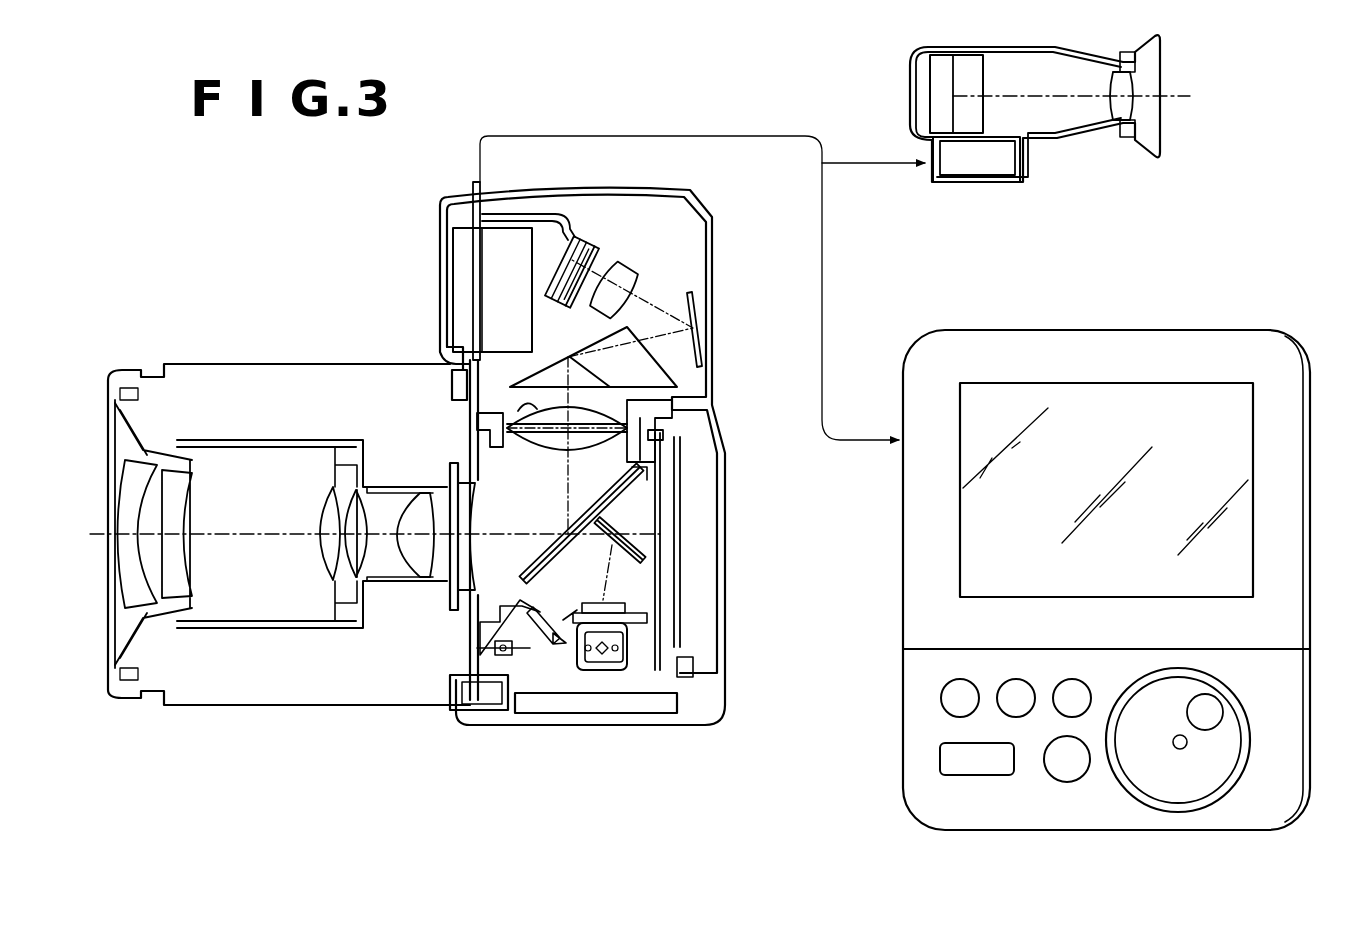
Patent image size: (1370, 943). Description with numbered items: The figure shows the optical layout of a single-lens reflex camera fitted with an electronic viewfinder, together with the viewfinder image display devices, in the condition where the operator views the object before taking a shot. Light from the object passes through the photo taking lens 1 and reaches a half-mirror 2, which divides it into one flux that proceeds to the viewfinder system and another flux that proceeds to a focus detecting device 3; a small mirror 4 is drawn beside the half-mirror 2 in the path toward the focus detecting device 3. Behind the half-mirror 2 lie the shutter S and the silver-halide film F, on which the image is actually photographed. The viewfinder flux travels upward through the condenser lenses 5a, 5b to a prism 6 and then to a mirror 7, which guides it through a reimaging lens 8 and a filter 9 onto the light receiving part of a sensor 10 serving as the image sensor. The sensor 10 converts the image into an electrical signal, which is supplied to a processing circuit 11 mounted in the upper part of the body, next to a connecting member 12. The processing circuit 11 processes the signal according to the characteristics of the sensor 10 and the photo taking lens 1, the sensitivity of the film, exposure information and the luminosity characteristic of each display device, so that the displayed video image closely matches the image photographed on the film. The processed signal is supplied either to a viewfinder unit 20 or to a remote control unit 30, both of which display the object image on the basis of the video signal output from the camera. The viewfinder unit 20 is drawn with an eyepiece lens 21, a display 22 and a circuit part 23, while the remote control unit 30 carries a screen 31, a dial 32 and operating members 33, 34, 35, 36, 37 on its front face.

The photo taking lens 1 is at (280, 708).
The half-mirror 2 is at (530, 570).
The focus detecting device 3 is at (630, 668).
The sub mirror 4 is at (641, 549).
The condenser lens 5a is at (548, 449).
The condenser lens 5b is at (527, 408).
The prism 6 is at (553, 355).
The mirror 7 is at (692, 302).
The reimaging lens 8 is at (630, 278).
The filter 9 is at (600, 243).
The sensor 10 is at (577, 232).
The processing circuit 11 is at (462, 258).
The connector pin 12 is at (469, 188).
The silver-halide film F is at (661, 478).
The shutter S is at (681, 520).
The viewfinder unit 20 is at (1080, 140).
The eyepiece lens 21 is at (1117, 88).
The viewfinder display 22 is at (975, 68).
The viewfinder circuit 23 is at (993, 170).
The remote control unit 30 is at (1222, 332).
The monitor screen 31 is at (1254, 423).
The control dial 32 is at (1251, 726).
The operation button 33 is at (1070, 857).
The operation button 34 is at (938, 857).
The operation button 35 is at (1033, 857).
The operation button 36 is at (1105, 857).
The operation key 37 is at (982, 857).